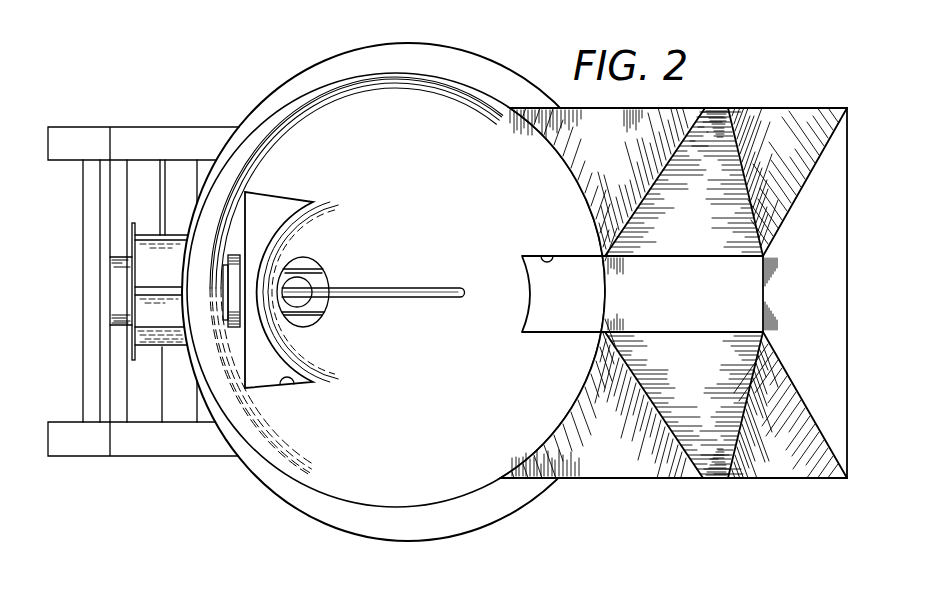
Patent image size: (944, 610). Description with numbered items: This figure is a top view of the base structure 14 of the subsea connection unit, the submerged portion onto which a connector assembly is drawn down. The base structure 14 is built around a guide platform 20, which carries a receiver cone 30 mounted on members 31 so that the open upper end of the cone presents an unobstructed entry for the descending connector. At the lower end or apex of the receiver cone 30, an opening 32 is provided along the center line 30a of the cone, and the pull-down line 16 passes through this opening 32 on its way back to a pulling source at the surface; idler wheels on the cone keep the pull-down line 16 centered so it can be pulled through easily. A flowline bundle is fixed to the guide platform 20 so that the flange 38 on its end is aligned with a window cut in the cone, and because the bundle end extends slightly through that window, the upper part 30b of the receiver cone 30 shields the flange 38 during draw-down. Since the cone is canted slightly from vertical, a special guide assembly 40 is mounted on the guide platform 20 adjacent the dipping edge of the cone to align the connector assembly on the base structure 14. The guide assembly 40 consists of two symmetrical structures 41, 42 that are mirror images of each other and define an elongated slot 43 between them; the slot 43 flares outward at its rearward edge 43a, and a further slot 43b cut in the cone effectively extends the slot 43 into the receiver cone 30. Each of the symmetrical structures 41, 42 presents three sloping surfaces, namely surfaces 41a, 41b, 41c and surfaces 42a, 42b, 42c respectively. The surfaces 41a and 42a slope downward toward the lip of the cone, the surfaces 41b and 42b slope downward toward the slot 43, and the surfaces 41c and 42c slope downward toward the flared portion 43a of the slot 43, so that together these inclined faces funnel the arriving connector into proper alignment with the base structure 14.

The base structure 14 is at (216, 108).
The pull-down line 16 is at (385, 287).
The guide platform 20 is at (206, 471).
The receiver cone 30 is at (347, 478).
The center line of cone 30a is at (284, 385).
The upper part of cone 30b is at (250, 448).
The members 31 is at (172, 127).
The opening 32 is at (305, 323).
The flange 38 is at (240, 260).
The guide assembly 40 is at (811, 99).
The symmetrical structure 41 is at (718, 108).
The sloping surface 41a is at (630, 165).
The sloping surface 41b is at (717, 201).
The sloping surface 41c is at (794, 157).
The symmetrical structure 42 is at (715, 479).
The sloping surface 42a is at (629, 434).
The sloping surface 42b is at (714, 384).
The sloping surface 42c is at (794, 434).
The elongated slot 43 is at (684, 306).
The rearward edge (flared portion) of slot 43a is at (793, 294).
The slot in cone 43b is at (541, 252).